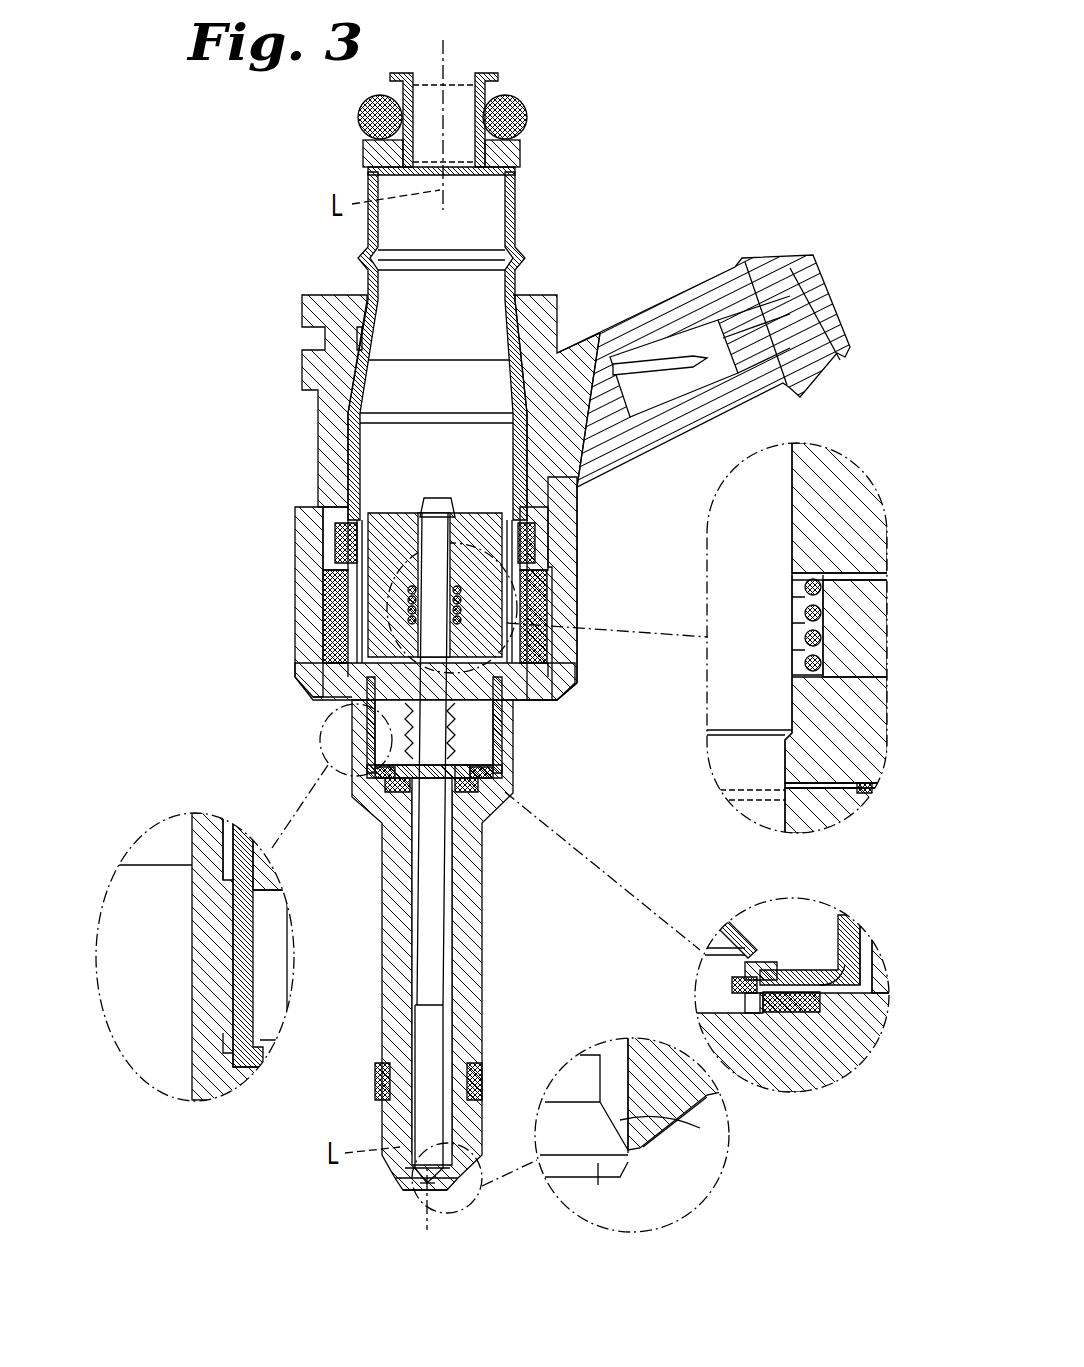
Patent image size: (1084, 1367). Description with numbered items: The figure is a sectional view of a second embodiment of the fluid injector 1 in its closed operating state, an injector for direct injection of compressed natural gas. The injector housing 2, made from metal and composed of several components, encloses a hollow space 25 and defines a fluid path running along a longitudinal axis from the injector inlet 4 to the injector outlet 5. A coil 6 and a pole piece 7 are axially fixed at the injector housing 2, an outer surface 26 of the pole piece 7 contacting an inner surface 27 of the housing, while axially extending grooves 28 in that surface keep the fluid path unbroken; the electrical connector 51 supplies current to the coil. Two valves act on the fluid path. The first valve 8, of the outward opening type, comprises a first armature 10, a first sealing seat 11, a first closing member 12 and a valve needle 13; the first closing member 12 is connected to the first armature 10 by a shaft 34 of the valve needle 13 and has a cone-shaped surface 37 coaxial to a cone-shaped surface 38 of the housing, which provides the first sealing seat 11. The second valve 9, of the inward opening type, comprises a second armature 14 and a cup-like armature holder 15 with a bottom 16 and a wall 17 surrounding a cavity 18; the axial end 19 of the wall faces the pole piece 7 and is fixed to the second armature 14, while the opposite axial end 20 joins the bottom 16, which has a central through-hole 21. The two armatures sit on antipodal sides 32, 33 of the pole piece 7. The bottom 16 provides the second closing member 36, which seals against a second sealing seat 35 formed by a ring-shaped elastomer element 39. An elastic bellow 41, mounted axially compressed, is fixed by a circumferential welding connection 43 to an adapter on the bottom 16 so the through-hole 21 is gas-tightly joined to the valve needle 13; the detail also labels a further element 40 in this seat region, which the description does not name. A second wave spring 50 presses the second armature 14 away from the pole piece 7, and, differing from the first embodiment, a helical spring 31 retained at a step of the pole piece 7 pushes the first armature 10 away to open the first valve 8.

The fluid injector 1 is at (285, 176).
The injector housing 2 is at (550, 477).
The injector inlet 4 is at (492, 80).
The injector outlet 5 is at (405, 1185).
The coil 6 is at (545, 620).
The pole piece 7 is at (343, 592).
The first valve 8 is at (567, 797).
The second valve 9 is at (361, 938).
The first armature 10 is at (375, 525).
The first sealing seat 11 is at (598, 1135).
The first closing member 12 is at (412, 1188).
The valve needle 13 is at (603, 848).
The second armature 14 is at (290, 686).
The armature holder 15 is at (500, 735).
The bottom 16 is at (478, 795).
The wall 17 is at (500, 755).
The cavity 18 is at (360, 718).
The axial end 19 is at (500, 680).
The opposite axial end 20 is at (480, 770).
The central through-hole 21 is at (460, 790).
The hollow space 25 is at (497, 201).
The outer surface 26 is at (520, 585).
The inner surface 27 is at (525, 630).
The axially extending grooves 28 is at (303, 603).
The helical spring 31 is at (808, 617).
The antipodal side 32 is at (830, 575).
The antipodal side 33 is at (790, 786).
The shaft 34 is at (432, 987).
The second sealing seat 35 is at (815, 1012).
The second closing member 36 is at (798, 1000).
The cone-shaped surface 37 is at (465, 1160).
The cone-shaped surface 38 is at (640, 1165).
The ring-shaped elastomer element 39 is at (611, 966).
The recess 40 is at (752, 1012).
The elastic bellow 41 is at (350, 742).
The circumferential welding connection 43 is at (748, 985).
The second wave spring 50 is at (866, 796).
The electrical connector 51 is at (672, 332).